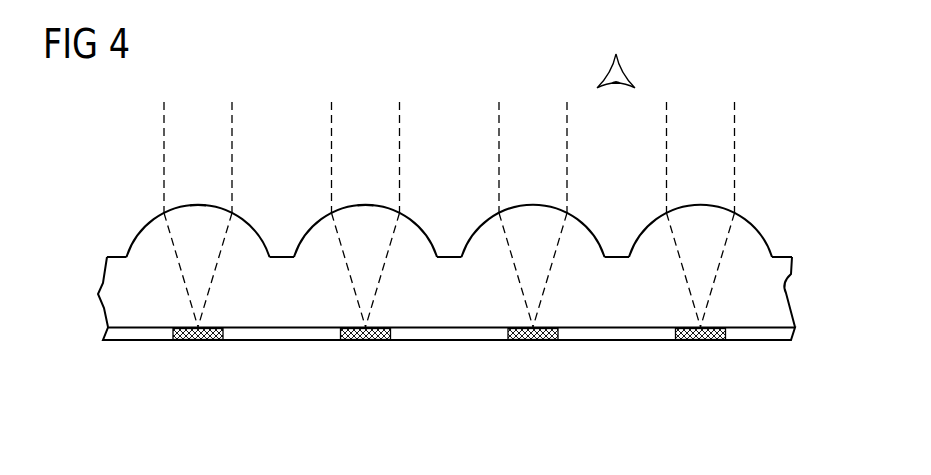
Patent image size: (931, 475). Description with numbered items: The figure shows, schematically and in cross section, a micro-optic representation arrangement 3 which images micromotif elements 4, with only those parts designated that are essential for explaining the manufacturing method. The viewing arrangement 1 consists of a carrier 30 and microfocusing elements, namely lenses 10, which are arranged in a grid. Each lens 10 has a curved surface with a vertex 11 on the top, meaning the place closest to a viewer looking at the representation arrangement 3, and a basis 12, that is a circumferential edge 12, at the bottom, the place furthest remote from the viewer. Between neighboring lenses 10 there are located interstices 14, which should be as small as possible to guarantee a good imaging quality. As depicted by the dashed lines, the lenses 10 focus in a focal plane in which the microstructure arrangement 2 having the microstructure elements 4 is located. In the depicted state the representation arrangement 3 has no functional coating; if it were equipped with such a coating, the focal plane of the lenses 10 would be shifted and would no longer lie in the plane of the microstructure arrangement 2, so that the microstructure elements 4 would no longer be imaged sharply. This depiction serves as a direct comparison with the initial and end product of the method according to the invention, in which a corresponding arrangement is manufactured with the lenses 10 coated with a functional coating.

The micro-optic representation arrangement 3 is at (84, 128).
The viewing arrangement 1 is at (72, 205).
The microfocusing elements 10 is at (753, 236).
The vertex 11 is at (198, 204).
The basis 12 is at (126, 256).
The interstices 14 is at (449, 228).
The carrier 30 is at (781, 280).
The microstructure arrangement 2 is at (790, 333).
The micromotif elements 4 is at (205, 343).